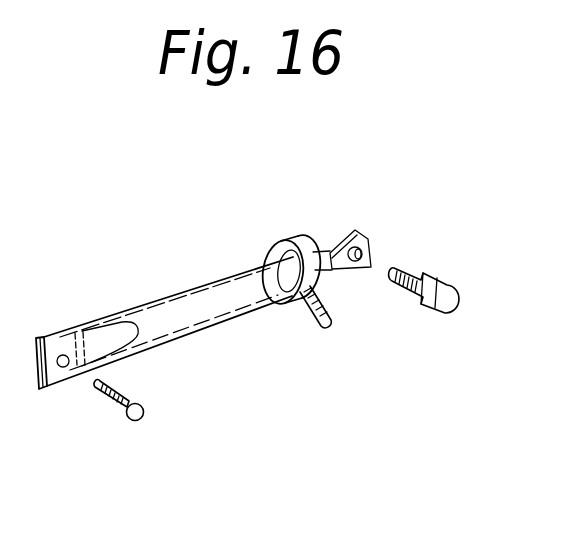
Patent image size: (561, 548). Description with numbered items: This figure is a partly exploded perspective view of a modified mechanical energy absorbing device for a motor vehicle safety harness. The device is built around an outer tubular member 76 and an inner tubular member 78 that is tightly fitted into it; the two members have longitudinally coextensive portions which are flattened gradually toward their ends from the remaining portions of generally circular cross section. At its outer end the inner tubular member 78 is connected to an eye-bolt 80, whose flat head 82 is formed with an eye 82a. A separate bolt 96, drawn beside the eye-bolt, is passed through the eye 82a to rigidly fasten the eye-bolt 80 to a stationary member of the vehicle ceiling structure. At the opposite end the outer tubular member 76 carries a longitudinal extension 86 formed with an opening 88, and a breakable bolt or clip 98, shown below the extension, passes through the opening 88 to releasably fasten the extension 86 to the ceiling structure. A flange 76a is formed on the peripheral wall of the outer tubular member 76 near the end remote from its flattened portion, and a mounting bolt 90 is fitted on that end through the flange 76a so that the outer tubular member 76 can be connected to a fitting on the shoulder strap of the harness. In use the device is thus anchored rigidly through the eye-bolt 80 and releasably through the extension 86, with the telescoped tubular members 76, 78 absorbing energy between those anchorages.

The outer tubular member 76 is at (165, 341).
The flange 76a is at (293, 243).
The inner tubular member 78 is at (240, 303).
The eye-bolt 80 is at (355, 222).
The bracket plate 82 is at (361, 238).
The eye 82a is at (358, 263).
The longitudinal extension 86 is at (67, 333).
The opening 88 is at (67, 367).
The mounting bolt 90 is at (323, 327).
The bolt 96 is at (441, 305).
The breakable bolt or clip 98 is at (143, 418).